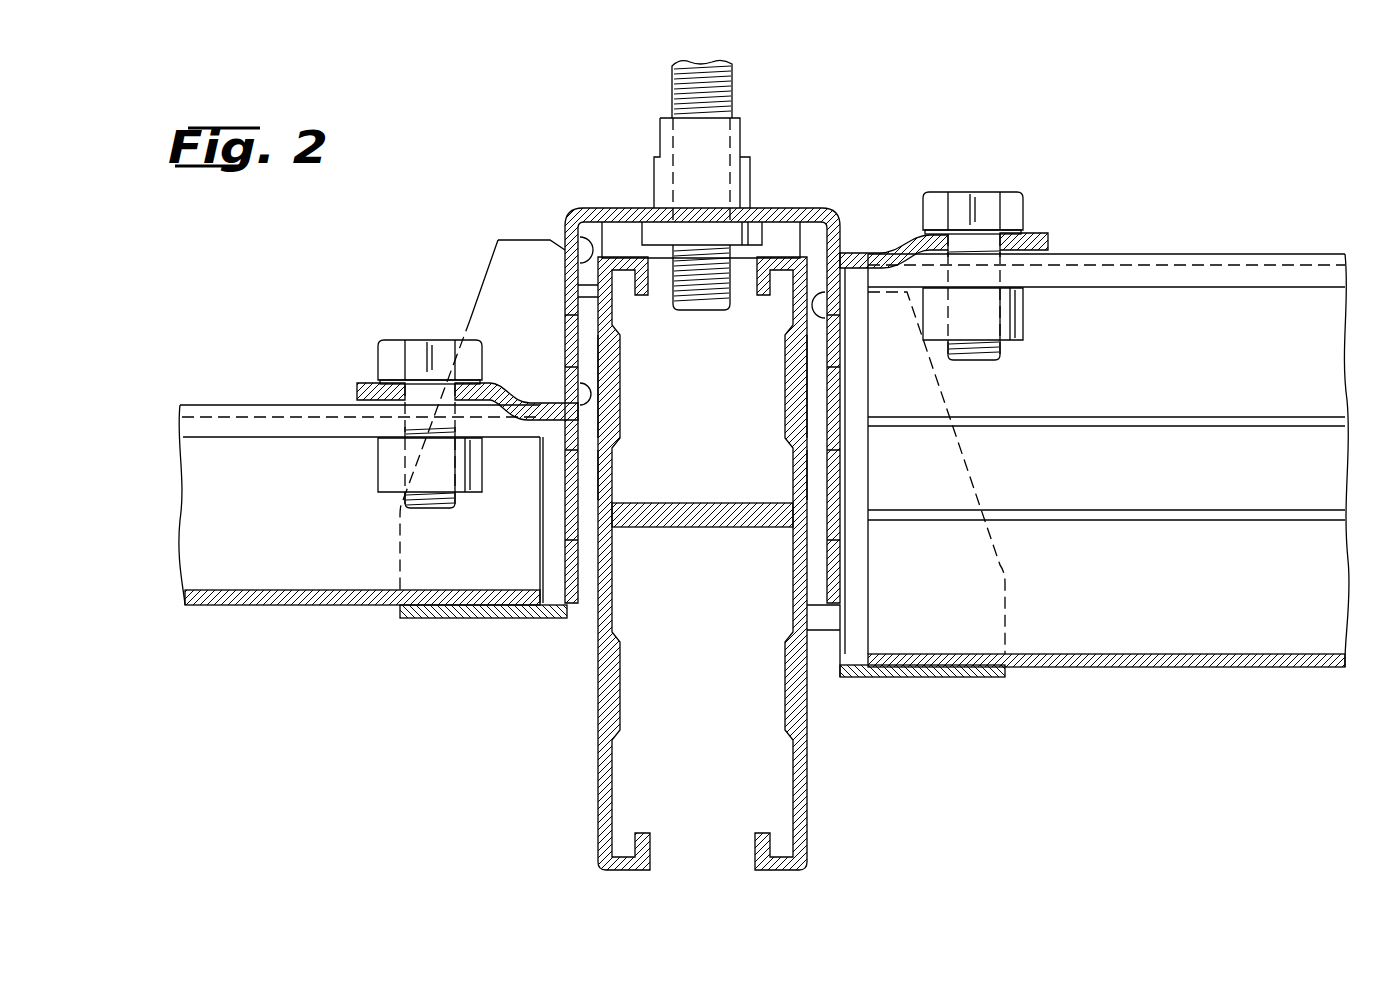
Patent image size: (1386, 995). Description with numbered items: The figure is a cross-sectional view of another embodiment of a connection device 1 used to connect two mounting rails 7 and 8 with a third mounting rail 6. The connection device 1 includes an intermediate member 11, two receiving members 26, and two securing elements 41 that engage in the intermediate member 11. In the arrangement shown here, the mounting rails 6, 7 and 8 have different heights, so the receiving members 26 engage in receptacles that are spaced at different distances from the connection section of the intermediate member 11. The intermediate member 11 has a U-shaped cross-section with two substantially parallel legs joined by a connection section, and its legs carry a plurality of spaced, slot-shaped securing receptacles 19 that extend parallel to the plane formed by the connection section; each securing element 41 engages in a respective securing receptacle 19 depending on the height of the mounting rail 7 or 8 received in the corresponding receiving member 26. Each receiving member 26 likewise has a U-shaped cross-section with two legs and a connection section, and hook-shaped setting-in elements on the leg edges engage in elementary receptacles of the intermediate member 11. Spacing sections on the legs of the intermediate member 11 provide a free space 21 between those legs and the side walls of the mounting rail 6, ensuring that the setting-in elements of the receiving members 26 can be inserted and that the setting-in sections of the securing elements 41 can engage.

The connection device 1 is at (912, 115).
The mounting rail 6 is at (610, 685).
The mounting rail 7 is at (1195, 640).
The mounting rail 8 is at (314, 570).
The intermediate member 11 is at (586, 206).
The securing receptacle 19 is at (838, 353).
The free space 21 is at (818, 472).
The receiving member 26 is at (517, 282).
The securing element 41 is at (374, 344).